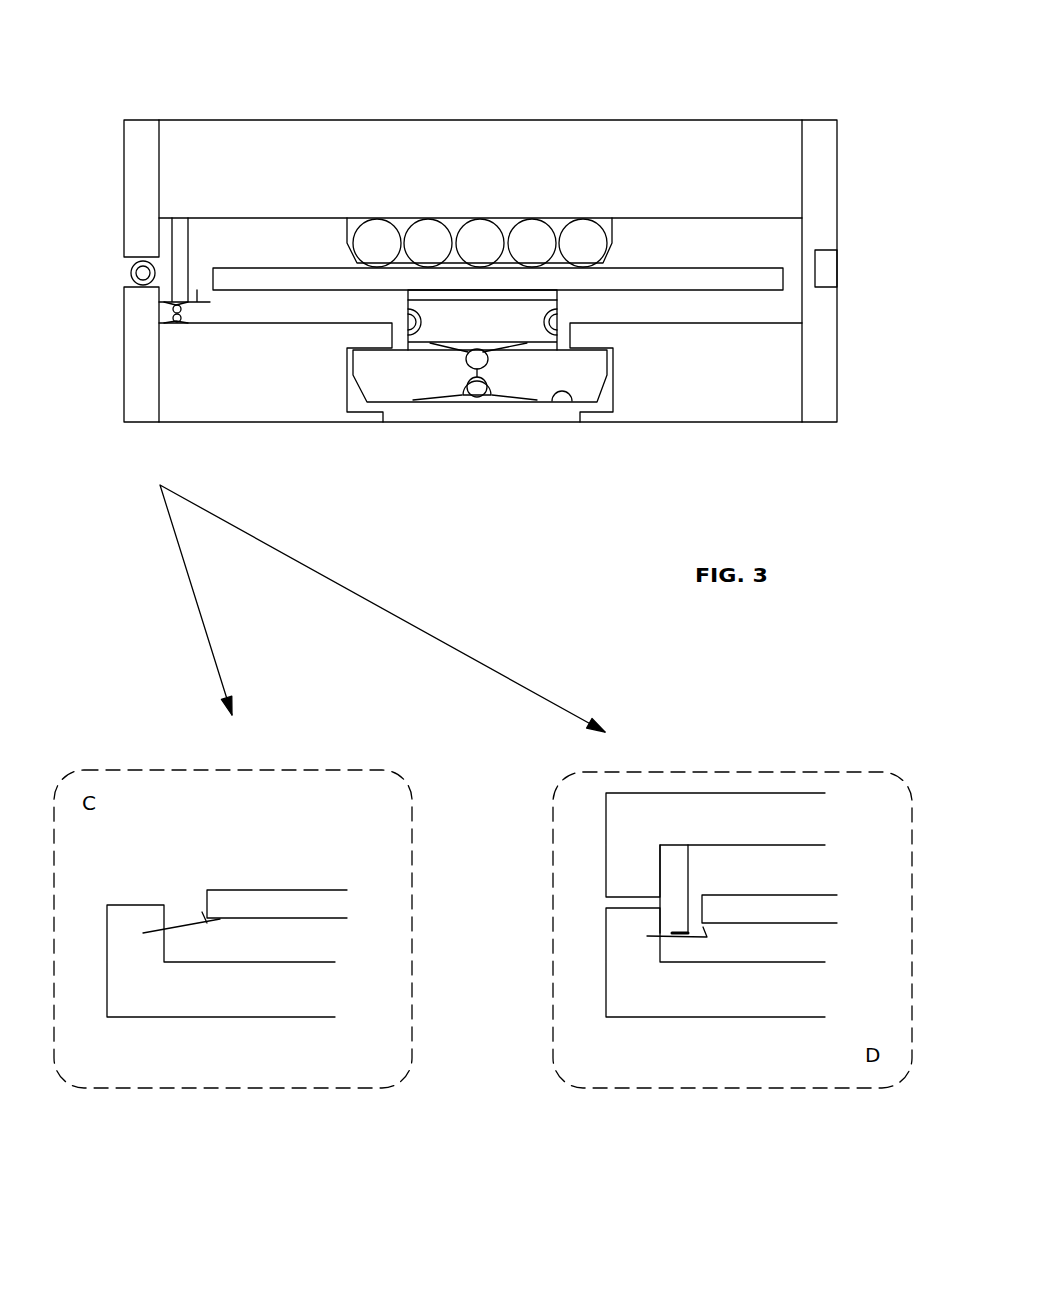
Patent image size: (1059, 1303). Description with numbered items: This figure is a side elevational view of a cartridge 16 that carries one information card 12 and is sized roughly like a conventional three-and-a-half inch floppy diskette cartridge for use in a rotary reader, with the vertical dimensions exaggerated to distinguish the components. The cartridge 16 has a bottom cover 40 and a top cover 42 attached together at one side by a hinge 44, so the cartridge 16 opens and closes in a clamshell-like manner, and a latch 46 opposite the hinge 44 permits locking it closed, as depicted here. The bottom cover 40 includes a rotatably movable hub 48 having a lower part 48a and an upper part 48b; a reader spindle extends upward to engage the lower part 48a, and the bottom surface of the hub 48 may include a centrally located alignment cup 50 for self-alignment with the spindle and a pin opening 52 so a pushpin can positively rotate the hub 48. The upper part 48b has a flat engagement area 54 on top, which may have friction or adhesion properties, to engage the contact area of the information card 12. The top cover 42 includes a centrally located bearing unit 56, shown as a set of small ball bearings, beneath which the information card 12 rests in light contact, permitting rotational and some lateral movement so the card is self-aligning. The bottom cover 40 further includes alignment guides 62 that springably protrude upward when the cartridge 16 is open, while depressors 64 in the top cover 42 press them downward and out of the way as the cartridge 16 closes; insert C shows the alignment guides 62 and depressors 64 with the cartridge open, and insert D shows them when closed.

The cartridge 16 is at (783, 57).
The information card 12 is at (677, 280).
The bottom cover 40 is at (780, 388).
The top cover 42 is at (780, 175).
The hinge 44 is at (131, 273).
The latch 46 is at (837, 273).
The hub 48 is at (597, 367).
The lower part 48a is at (393, 385).
The upper part 48b is at (533, 315).
The alignment cup 50 is at (478, 400).
The pin opening 52 is at (562, 398).
The engagement area 54 is at (408, 299).
The bearing unit 56 is at (482, 217).
The alignment guides 62 is at (180, 333).
The depressors 64 is at (177, 235).